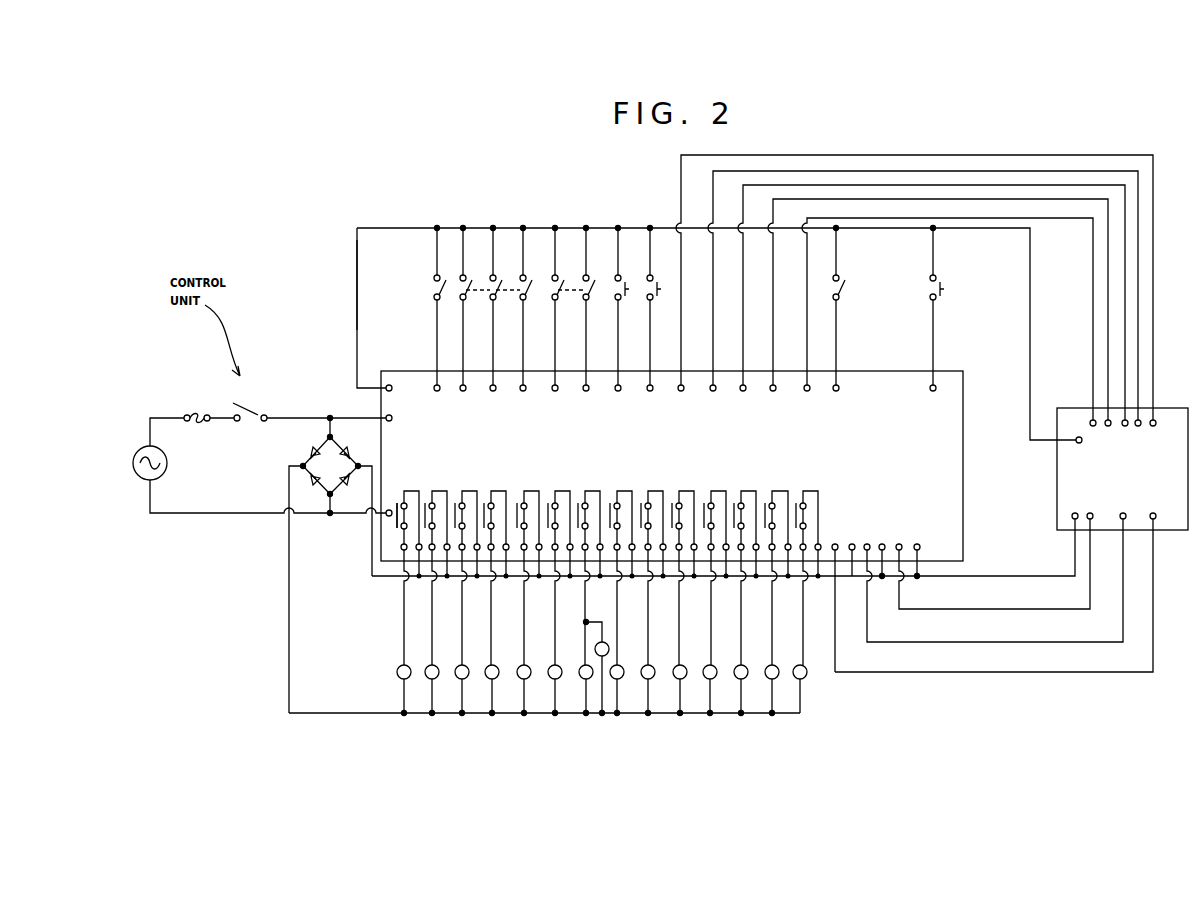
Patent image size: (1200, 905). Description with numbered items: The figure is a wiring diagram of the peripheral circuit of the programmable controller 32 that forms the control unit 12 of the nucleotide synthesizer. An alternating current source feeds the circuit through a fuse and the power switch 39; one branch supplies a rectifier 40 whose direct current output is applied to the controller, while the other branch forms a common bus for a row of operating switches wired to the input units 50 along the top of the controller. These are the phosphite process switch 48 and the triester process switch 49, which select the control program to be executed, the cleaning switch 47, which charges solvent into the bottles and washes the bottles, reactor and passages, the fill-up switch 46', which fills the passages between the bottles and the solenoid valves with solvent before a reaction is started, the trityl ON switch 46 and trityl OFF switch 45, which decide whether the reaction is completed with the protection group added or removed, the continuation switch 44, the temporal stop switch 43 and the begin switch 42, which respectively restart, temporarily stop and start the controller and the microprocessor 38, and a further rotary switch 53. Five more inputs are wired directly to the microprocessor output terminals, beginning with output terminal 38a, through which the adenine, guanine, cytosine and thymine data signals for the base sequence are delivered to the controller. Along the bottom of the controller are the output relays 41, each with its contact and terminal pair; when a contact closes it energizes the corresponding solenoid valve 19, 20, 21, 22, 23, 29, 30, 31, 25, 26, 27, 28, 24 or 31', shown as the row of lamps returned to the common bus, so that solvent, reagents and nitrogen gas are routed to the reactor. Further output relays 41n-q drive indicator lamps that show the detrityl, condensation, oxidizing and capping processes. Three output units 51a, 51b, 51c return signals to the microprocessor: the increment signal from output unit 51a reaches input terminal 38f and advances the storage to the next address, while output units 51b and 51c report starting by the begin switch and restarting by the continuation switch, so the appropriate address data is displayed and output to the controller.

The control unit 12 is at (323, 378).
The solenoid valve 19 is at (436, 678).
The solenoid valve 20 is at (465, 678).
The solenoid valve 21 is at (495, 678).
The solenoid valve 22 is at (527, 678).
The solenoid valve 23 is at (558, 678).
The solenoid valve 24 is at (776, 678).
The solenoid valve 25 is at (650, 678).
The solenoid valve 26 is at (683, 678).
The solenoid valve 27 is at (713, 678).
The solenoid valve 28 is at (744, 678).
The solenoid valve 29 is at (588, 678).
The solenoid valve 30 is at (603, 640).
The solenoid valve 31 is at (626, 713).
The solenoid valve 31' is at (825, 691).
The programmable controller 32 is at (845, 348).
The microprocessor 38 is at (1057, 466).
The output terminal of microprocessor 38a is at (916, 290).
The input terminal of microprocessor 38f is at (1002, 581).
The power switch 39 is at (255, 403).
The rectifier 40 is at (310, 449).
The output relays 41 is at (422, 490).
The output relays 41n-q is at (396, 522).
The begin switch 42 is at (948, 293).
The temporal stop switch 43 is at (657, 270).
The continuation switch 44 is at (627, 268).
The trityl OFF switch 45 is at (594, 270).
The trityl ON switch 46 is at (562, 289).
The fill-up switch 46' is at (539, 274).
The cleaning switch 47 is at (503, 270).
The phosphite process switch 48 is at (445, 270).
The triester process switch 49 is at (472, 267).
The input units 50 is at (671, 398).
The output unit 51a is at (843, 542).
The output unit 51b is at (873, 545).
The output unit 51c is at (912, 545).
The rotary switch 53 is at (847, 288).